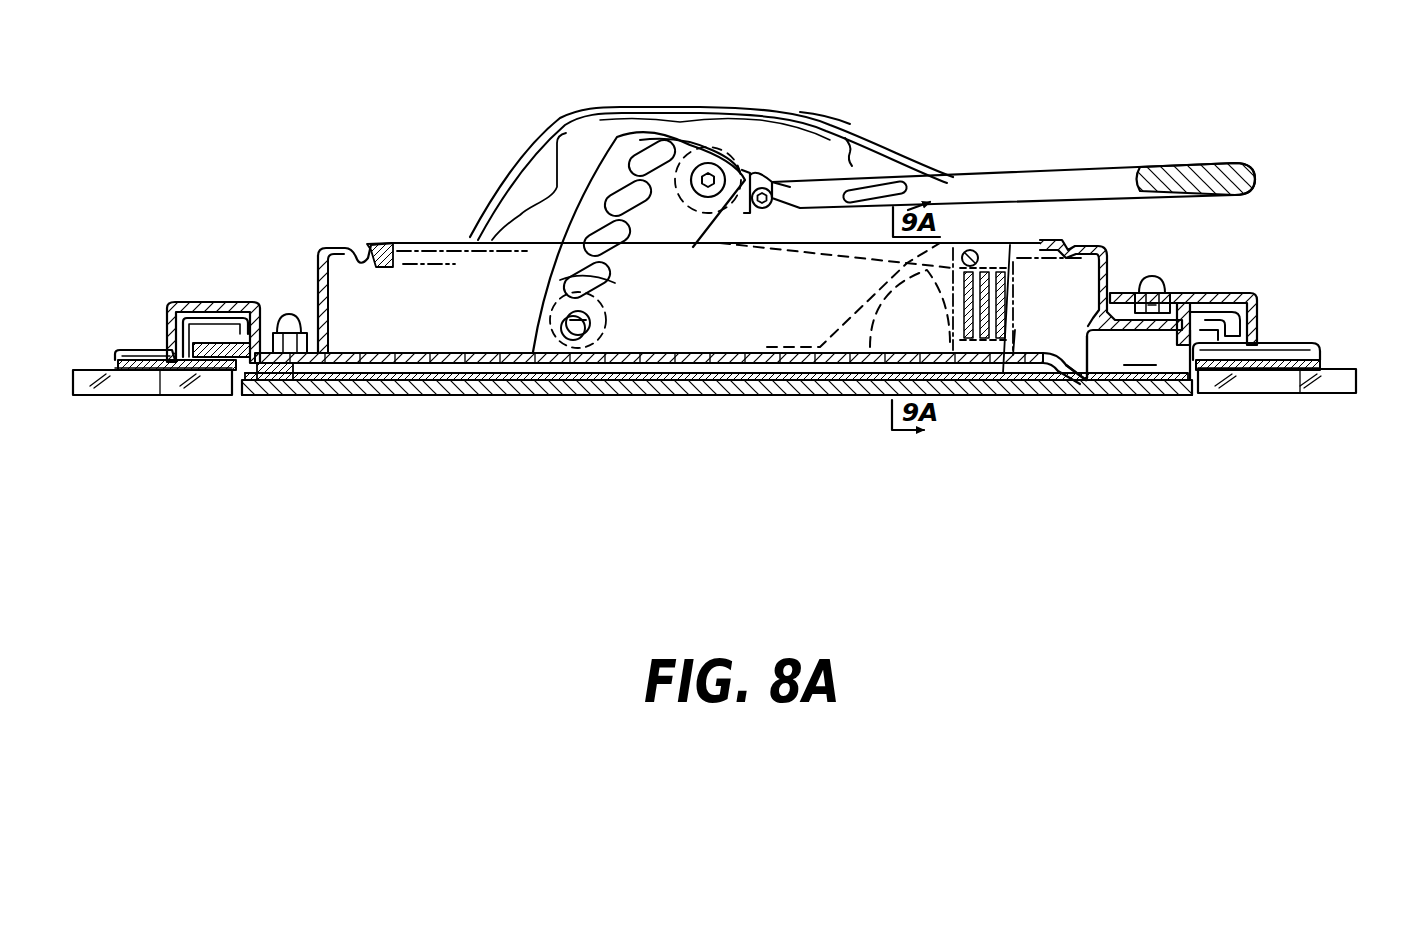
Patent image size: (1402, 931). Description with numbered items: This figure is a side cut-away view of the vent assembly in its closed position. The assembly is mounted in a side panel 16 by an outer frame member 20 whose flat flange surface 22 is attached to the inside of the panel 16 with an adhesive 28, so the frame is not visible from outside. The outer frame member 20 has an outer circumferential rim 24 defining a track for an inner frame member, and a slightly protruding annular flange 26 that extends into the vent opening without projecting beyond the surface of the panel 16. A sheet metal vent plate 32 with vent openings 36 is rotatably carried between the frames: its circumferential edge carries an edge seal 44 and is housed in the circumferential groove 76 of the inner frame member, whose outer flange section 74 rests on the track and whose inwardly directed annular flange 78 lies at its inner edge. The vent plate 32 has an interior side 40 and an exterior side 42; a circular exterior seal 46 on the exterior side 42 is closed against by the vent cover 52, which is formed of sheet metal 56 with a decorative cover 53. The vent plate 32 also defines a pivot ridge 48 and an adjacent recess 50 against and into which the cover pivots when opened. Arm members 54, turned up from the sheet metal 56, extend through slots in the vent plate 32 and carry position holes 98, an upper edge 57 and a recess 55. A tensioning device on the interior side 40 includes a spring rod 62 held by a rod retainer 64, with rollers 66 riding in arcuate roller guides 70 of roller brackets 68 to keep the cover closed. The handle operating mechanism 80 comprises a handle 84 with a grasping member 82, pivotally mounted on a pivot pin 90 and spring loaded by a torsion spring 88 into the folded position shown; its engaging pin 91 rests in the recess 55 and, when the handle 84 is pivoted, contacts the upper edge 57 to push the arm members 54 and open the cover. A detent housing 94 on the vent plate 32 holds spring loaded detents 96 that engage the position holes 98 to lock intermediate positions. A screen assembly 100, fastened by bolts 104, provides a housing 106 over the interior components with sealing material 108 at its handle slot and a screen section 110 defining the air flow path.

The side panel 16 is at (97, 397).
The outer frame member 20 is at (1282, 342).
The flange surface 22 is at (196, 374).
The outer circumferential rim 24 is at (118, 363).
The annular flange 26 is at (244, 384).
The adhesive 28 is at (168, 382).
The vent plate 32 is at (496, 364).
The vent openings 36 is at (737, 365).
The interior side 40 is at (362, 352).
The exterior side 42 is at (354, 364).
The edge seal 44 is at (1218, 322).
The exterior seal 46 is at (288, 366).
The pivot ridge 48 is at (1080, 397).
The recess 50 is at (1138, 355).
The vent cover 52 is at (450, 390).
The decorative cover 53 is at (800, 397).
The arm members 54 is at (540, 300).
The recess 55 is at (780, 188).
The sheet metal 56 is at (1003, 375).
The upper edge 57 is at (678, 140).
The spring rod 62 is at (1013, 322).
The rod retainer 64 is at (1014, 357).
The rollers 66 is at (990, 254).
The roller brackets 68 is at (855, 325).
The roller guides 70 is at (895, 305).
The outer flange section 74 is at (133, 354).
The circumferential groove 76 is at (186, 322).
The annular flange 78 is at (252, 352).
The handle operating mechanism 80 is at (722, 134).
The grasping member 82 is at (1205, 185).
The handle 84 is at (1043, 188).
The torsion spring 88 is at (880, 186).
The pivot pin 90 is at (708, 198).
The engaging pin 91 is at (759, 188).
The detent housing 94 is at (600, 321).
The detents 96 is at (580, 332).
The position holes 98 is at (602, 280).
The screen assembly 100 is at (541, 130).
The bolts 104 is at (1148, 278).
The housing 106 is at (824, 113).
The sealing material 108 is at (900, 168).
The screen section 110 is at (440, 246).